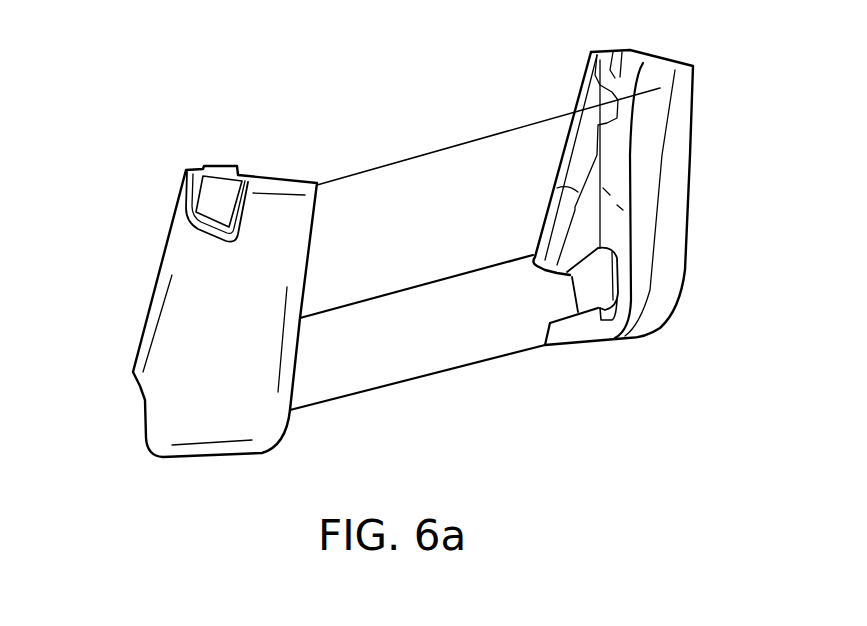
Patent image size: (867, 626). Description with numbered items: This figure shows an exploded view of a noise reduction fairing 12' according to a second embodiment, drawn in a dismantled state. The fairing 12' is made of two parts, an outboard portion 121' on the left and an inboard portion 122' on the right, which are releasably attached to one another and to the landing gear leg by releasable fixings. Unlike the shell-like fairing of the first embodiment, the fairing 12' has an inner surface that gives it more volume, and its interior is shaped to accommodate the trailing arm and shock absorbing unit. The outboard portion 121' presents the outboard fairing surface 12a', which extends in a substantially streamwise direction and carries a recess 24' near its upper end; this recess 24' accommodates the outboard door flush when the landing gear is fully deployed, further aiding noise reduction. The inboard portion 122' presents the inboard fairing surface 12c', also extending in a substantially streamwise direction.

The noise reduction fairing 12' is at (401, 253).
The outboard portion 121' is at (196, 290).
The inboard portion 122' is at (646, 197).
The outboard fairing surface 12a' is at (196, 311).
The inboard fairing surface 12c' is at (645, 197).
The recess 24' is at (217, 182).